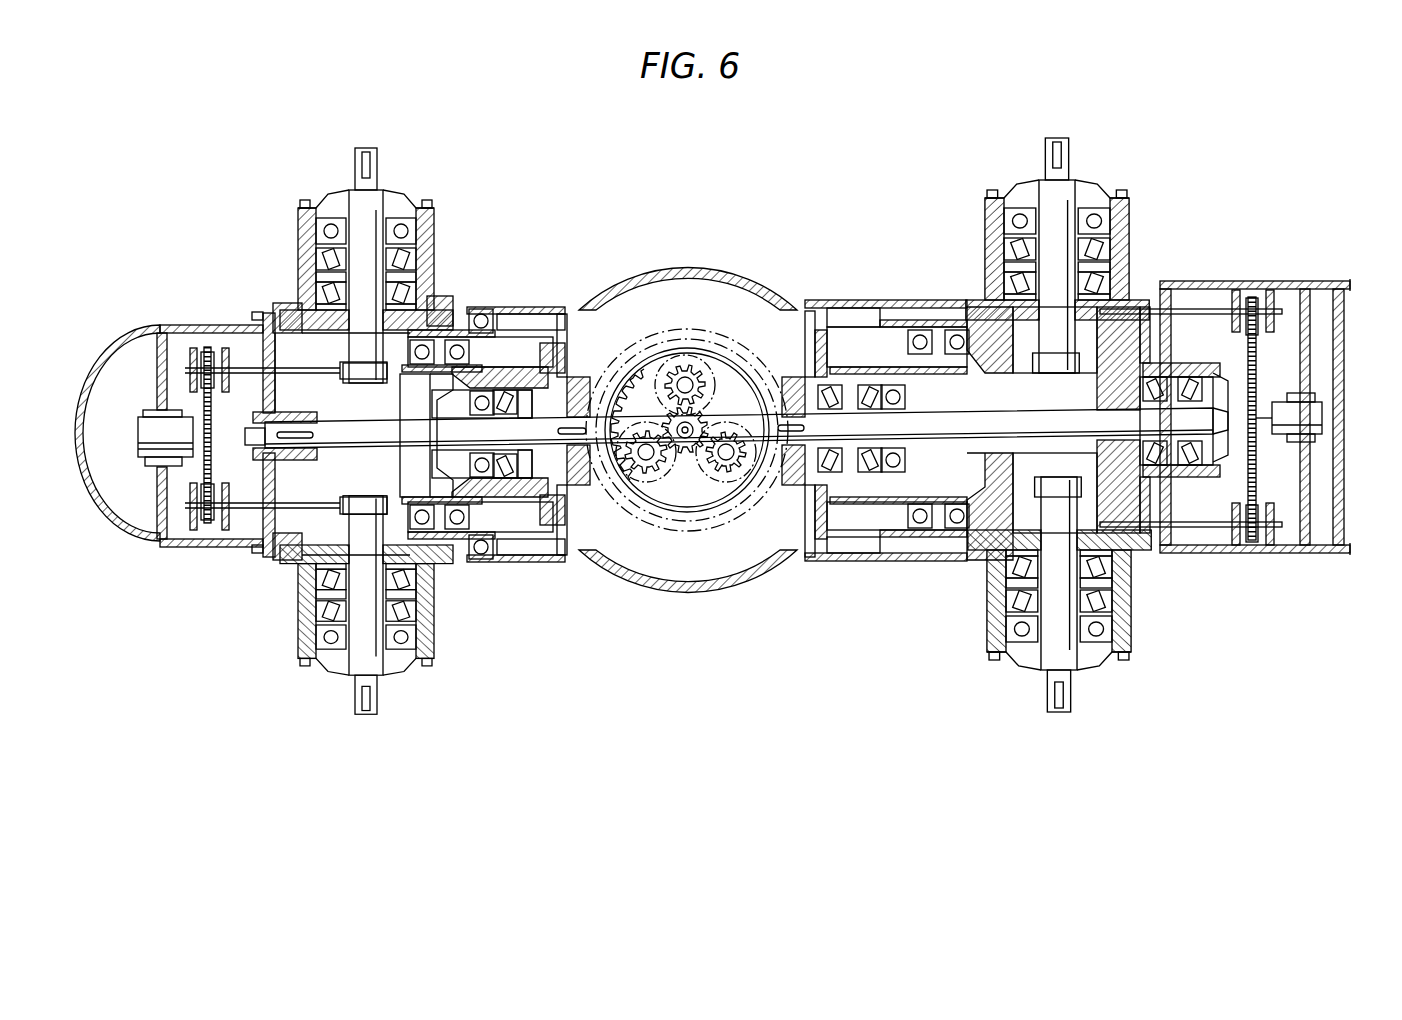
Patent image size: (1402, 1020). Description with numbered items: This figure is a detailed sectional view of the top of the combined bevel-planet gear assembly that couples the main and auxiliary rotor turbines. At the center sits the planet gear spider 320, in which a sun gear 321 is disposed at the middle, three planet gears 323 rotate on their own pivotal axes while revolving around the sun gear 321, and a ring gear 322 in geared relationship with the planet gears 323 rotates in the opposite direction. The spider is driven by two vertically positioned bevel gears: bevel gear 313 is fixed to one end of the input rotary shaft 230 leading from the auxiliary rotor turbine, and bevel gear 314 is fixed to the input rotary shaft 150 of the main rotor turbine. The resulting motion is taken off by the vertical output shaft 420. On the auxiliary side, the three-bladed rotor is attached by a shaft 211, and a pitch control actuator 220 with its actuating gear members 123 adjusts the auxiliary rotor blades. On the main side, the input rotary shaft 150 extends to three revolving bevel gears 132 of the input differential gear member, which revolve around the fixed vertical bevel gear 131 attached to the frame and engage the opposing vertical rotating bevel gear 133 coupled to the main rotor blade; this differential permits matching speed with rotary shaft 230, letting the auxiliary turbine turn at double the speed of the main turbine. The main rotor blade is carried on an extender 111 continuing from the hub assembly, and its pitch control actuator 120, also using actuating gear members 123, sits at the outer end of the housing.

The extender 111 is at (1060, 200).
The pitch control actuator 120 is at (1292, 375).
The actuating gear members 123 is at (213, 410).
The fixed vertical bevel gear 131 is at (975, 330).
The revolving bevel gears 132 is at (1010, 322).
The vertical rotating bevel gear 133 is at (1125, 347).
The input rotary shaft 150 is at (1027, 420).
The shaft 211 is at (372, 215).
The pitch control actuator 220 is at (172, 486).
The input rotary shaft 230 is at (358, 437).
The bevel gear 313 is at (588, 520).
The bevel gear 314 is at (772, 520).
The planetary gear housing 320 is at (625, 312).
The sun gear 321 is at (630, 388).
The ring gear 322 is at (660, 432).
The planet gears 323 is at (680, 378).
The vertical output shaft 420 is at (687, 437).